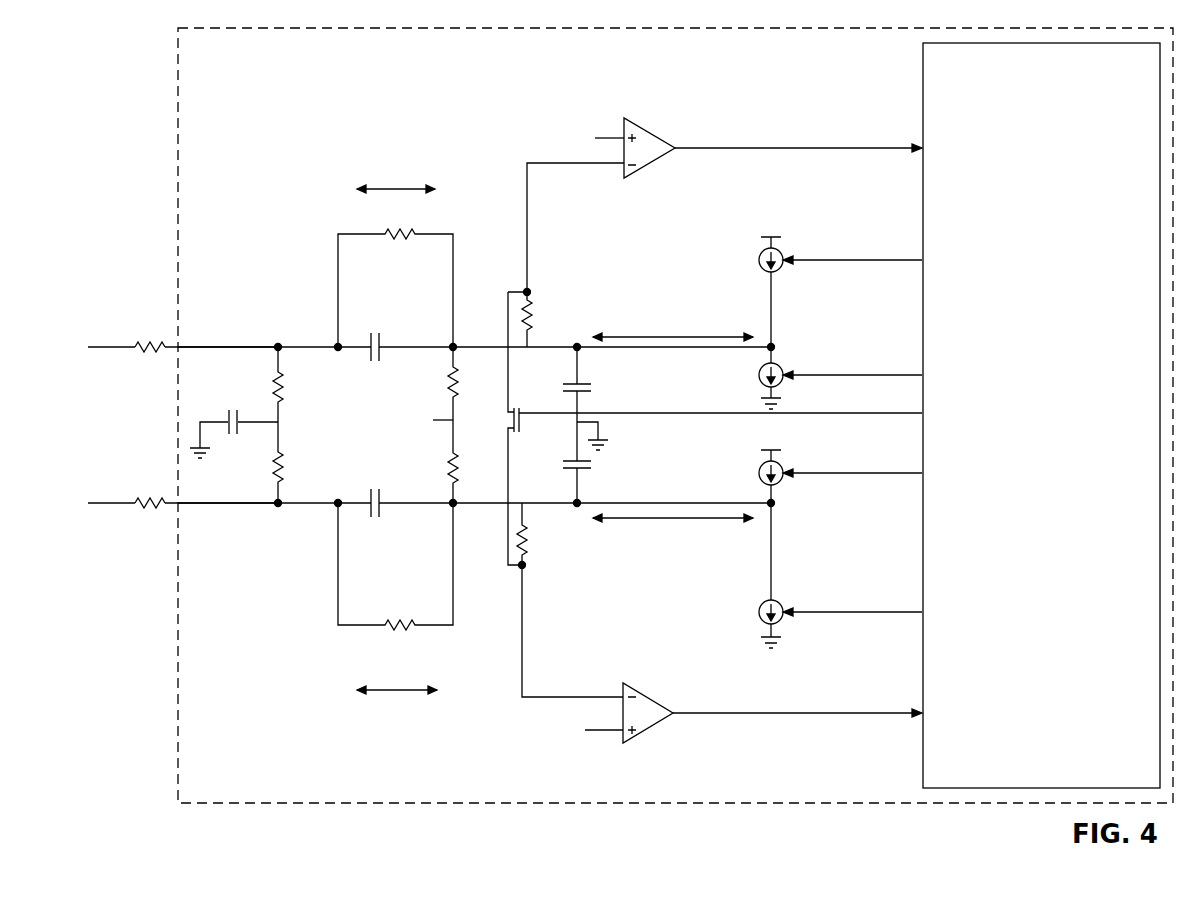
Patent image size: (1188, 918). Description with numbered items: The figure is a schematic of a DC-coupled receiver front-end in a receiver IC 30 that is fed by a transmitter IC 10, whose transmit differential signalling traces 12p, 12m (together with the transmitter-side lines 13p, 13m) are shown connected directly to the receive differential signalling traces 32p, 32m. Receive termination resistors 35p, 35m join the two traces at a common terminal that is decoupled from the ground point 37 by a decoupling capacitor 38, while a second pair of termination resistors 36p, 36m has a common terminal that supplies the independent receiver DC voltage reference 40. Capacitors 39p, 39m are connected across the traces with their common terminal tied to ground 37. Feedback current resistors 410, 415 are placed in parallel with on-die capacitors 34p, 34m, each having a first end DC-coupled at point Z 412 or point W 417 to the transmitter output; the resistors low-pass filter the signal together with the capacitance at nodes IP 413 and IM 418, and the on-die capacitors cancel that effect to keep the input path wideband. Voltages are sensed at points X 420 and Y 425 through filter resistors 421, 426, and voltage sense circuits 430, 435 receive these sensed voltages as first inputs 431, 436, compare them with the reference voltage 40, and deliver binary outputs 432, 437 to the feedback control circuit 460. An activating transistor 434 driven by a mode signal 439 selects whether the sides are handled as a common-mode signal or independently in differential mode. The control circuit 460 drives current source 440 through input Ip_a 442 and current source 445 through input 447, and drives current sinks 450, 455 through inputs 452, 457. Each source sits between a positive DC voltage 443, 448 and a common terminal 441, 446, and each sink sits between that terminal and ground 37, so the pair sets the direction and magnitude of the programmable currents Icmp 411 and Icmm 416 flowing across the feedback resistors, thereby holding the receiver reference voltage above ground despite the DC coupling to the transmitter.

The transmitter IC 10 is at (70, 428).
The transmit differential signalling trace Txp 12p is at (157, 352).
The transmit differential signalling trace Txm 12m is at (157, 508).
The transmitter output line (positive) 13p is at (123, 345).
The transmitter output line (negative) 13m is at (105, 506).
The receiver IC 30 is at (221, 60).
The receive differential signalling trace Rxp 32p is at (247, 345).
The receive differential signalling trace Rxm 32m is at (243, 508).
The on-die capacitor 34p is at (377, 330).
The on-die capacitor 34m is at (378, 518).
The receive termination resistor R1p 35p is at (285, 385).
The receive termination resistor R1m 35m is at (285, 468).
The receive termination resistor R2p 36p is at (449, 378).
The receive termination resistor R2m 36m is at (449, 468).
The ground point GND 37 is at (205, 456).
The decoupling capacitor Ccm 38 is at (233, 408).
The capacitor C2p 39p is at (581, 382).
The capacitor C2m 39m is at (583, 471).
The receiver DC voltage reference VcmRef 40 is at (440, 424).
The feedback current resistor Rfp 410 is at (392, 240).
The programmable current Icmp 411 is at (400, 175).
The point Z 412 is at (333, 343).
The node IP 413 is at (457, 352).
The feedback current resistor Rfm 415 is at (392, 622).
The programmable current Icmm 416 is at (400, 696).
The point W 417 is at (334, 508).
The node IM 418 is at (457, 499).
The point X 420 is at (531, 289).
The filter resistor 421 is at (531, 305).
The point Y 425 is at (527, 570).
The filter resistor 426 is at (527, 555).
The voltage sense circuit 430 is at (645, 128).
The first input 431 is at (532, 160).
The output 432 is at (728, 146).
The activating transistor Q1 434 is at (512, 428).
The voltage sense circuit 435 is at (630, 692).
The first input 436 is at (530, 695).
The output 437 is at (720, 716).
The mode signal 439 is at (838, 411).
The current source 440 is at (760, 268).
The common terminal 441 is at (775, 344).
The input Ip_a 442 is at (835, 258).
The positive DC voltage 443 is at (778, 235).
The current source 445 is at (760, 468).
The common terminal 446 is at (776, 508).
The input Im_b 447 is at (900, 471).
The positive DC voltage 448 is at (776, 448).
The current sink 450 is at (760, 384).
The input Im_a 452 is at (835, 373).
The current sink 455 is at (760, 604).
The input Im_b 457 is at (900, 610).
The feedback control circuit 460 is at (1150, 781).